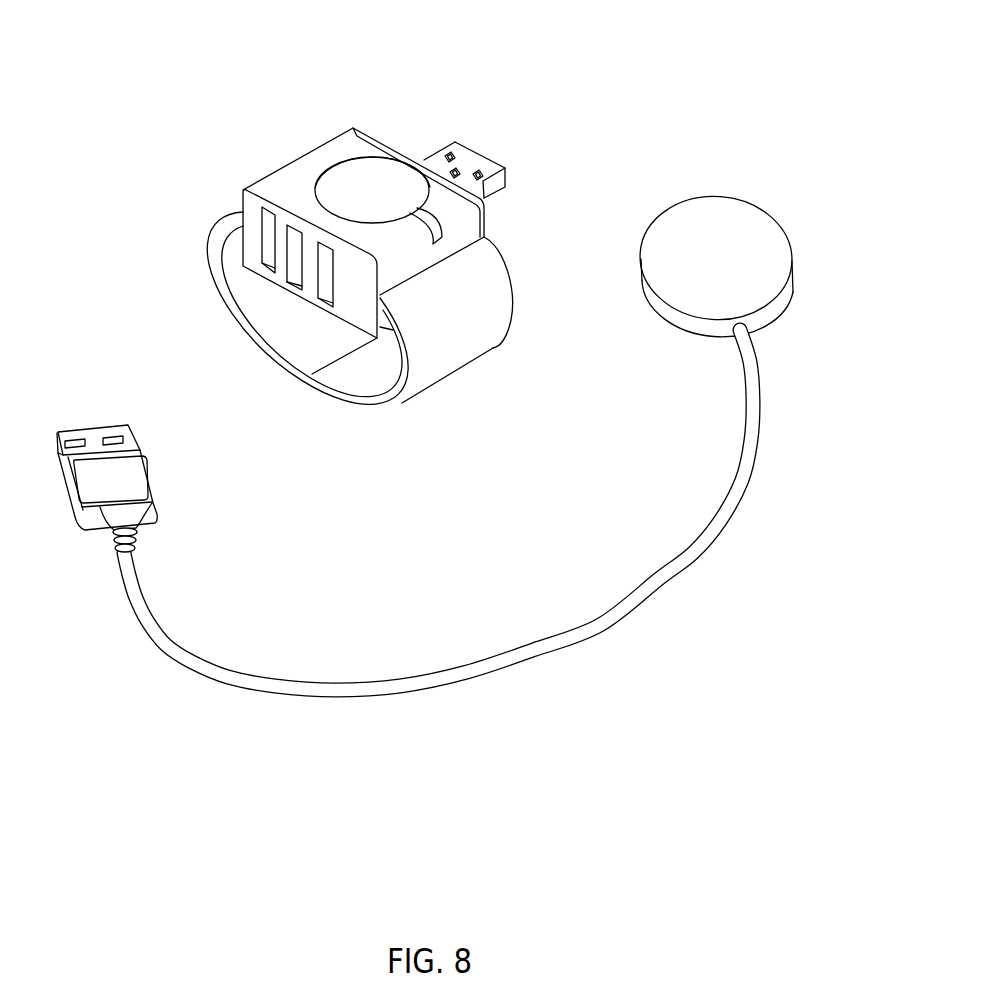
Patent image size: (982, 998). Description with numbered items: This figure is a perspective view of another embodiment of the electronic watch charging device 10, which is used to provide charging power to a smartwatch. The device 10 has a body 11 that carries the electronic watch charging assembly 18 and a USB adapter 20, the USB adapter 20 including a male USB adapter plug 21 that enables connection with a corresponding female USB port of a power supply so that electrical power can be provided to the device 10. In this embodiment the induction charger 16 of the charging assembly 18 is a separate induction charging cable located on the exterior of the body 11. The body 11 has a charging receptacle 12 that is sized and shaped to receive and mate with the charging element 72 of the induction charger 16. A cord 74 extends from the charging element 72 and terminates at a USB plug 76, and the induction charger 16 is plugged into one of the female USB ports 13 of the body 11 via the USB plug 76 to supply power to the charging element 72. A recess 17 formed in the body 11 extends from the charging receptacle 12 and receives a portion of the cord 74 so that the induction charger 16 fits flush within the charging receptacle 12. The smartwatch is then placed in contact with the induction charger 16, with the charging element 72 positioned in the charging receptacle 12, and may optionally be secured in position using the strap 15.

The device 10 is at (176, 91).
The body 11 is at (307, 155).
The charging receptacle 12 is at (317, 185).
The female USB ports 13 is at (267, 262).
The strap 15 is at (493, 342).
The induction charger 16 is at (755, 170).
The recess 17 is at (440, 226).
The electronic watch charging assembly 18 is at (598, 165).
The USB adapter 20 is at (373, 133).
The male USB adapter plug 21 is at (465, 165).
The charging element 72 is at (790, 290).
The cord 74 is at (747, 503).
The USB plug 76 is at (110, 478).